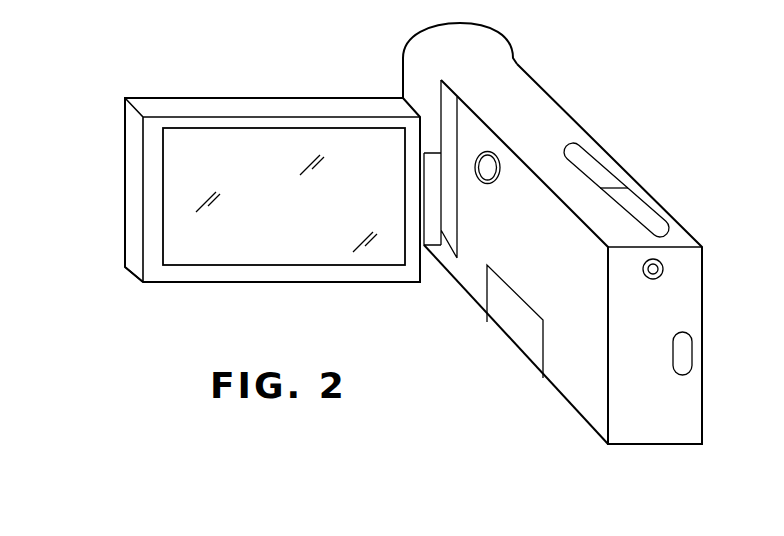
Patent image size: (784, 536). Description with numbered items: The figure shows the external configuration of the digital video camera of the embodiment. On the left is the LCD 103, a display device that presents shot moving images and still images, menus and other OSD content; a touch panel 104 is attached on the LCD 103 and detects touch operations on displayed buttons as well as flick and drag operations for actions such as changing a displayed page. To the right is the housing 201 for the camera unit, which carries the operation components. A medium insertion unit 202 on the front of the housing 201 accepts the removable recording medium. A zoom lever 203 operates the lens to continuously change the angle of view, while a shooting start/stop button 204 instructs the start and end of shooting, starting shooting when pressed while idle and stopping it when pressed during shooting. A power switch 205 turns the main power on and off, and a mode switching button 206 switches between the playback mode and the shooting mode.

The LCD 103 is at (200, 97).
The touch panel 104 is at (263, 128).
The housing 201 is at (403, 55).
The medium insertion unit 202 is at (514, 320).
The zoom lever 203 is at (600, 158).
The shooting start/stop button 204 is at (683, 376).
The power switch 205 is at (659, 260).
The mode switching button 206 is at (493, 152).